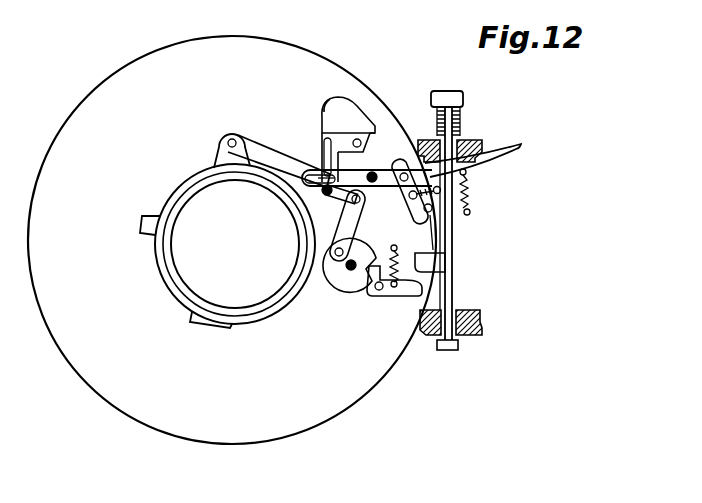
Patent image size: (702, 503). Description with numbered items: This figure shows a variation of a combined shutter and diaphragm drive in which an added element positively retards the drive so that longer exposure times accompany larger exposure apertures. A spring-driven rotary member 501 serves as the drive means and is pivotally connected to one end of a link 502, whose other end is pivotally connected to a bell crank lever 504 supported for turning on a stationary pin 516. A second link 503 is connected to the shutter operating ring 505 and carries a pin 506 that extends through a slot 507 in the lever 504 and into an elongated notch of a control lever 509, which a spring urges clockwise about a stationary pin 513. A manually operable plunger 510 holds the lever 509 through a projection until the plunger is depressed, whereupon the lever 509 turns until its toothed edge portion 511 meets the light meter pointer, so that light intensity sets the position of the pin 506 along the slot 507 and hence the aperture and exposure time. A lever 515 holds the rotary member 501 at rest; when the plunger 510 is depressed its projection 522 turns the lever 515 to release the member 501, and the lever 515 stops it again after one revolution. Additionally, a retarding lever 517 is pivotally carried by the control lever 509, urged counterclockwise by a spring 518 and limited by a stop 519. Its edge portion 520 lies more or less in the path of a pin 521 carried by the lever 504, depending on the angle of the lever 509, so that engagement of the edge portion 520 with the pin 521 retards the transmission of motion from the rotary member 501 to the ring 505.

The rotary member 501 is at (347, 284).
The link 502 is at (350, 226).
The second link 503 is at (258, 150).
The bell crank lever 504 is at (338, 205).
The shutter operating ring 505 is at (189, 180).
The pin 506 is at (320, 190).
The slot 507 is at (318, 170).
The control lever 509 is at (398, 180).
The manually operable plunger 510 is at (460, 112).
The toothed edge portion 511 is at (497, 167).
The stationary pin 513 is at (385, 176).
The lever 515 is at (385, 293).
The stationary pin 516 is at (330, 197).
The retarding lever 517 is at (352, 118).
The spring 518 is at (438, 192).
The stop 519 is at (432, 208).
The edge portion 520 is at (336, 105).
The pin 521 is at (372, 177).
The projection 522 is at (430, 265).